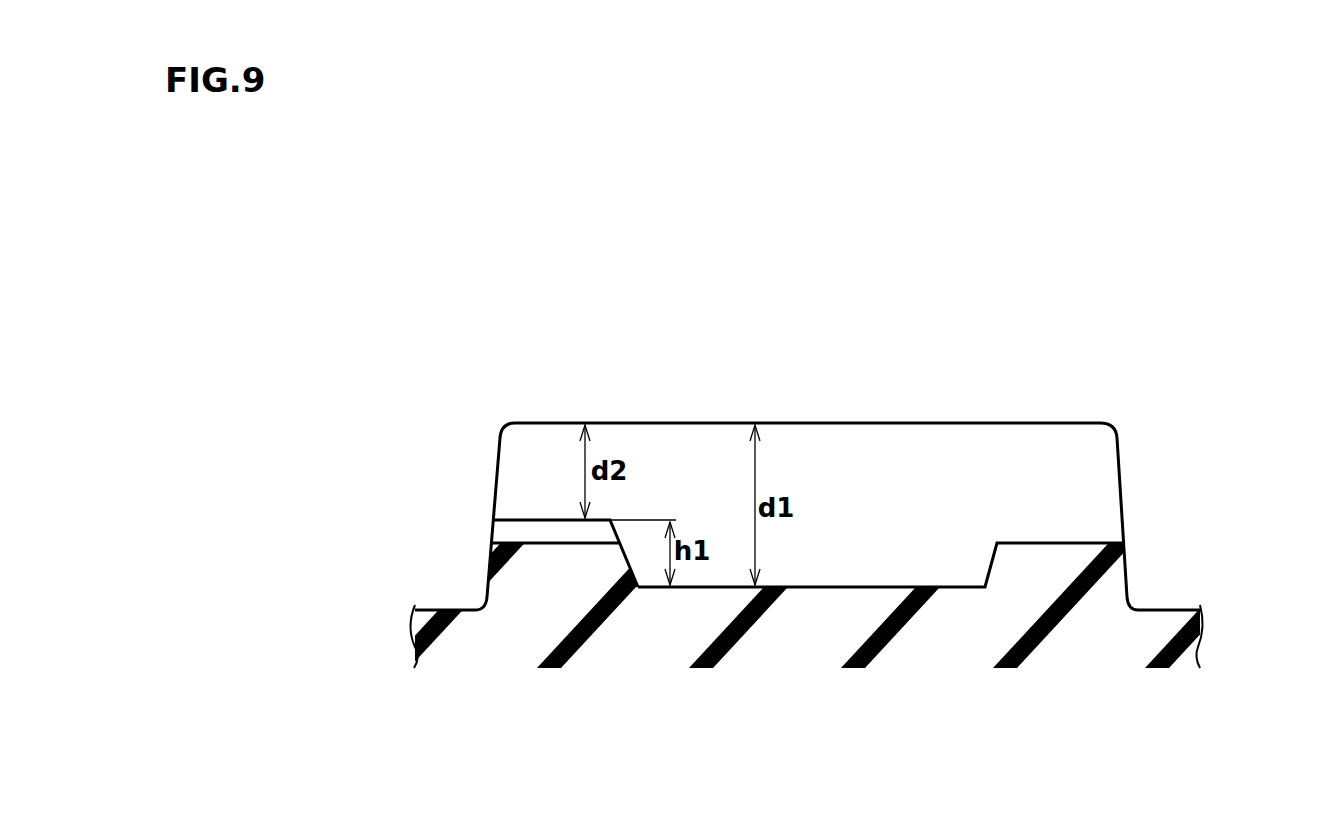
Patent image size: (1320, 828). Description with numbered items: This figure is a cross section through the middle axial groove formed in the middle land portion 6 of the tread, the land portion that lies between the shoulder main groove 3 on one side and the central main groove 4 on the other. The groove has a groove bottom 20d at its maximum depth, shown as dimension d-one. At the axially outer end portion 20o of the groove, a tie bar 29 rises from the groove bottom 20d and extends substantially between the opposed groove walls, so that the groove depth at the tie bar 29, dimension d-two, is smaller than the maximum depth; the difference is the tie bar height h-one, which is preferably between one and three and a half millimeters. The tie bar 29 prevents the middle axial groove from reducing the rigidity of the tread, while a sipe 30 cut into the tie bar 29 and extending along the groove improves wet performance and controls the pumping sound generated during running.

The shoulder main groove 3 is at (443, 518).
The central main groove 4 is at (1157, 540).
The middle land portion 6 is at (864, 412).
The axially outer end portion 20o is at (549, 457).
The groove bottom 20d is at (853, 587).
The tie bar 29 is at (540, 568).
The sipe 30 is at (528, 532).